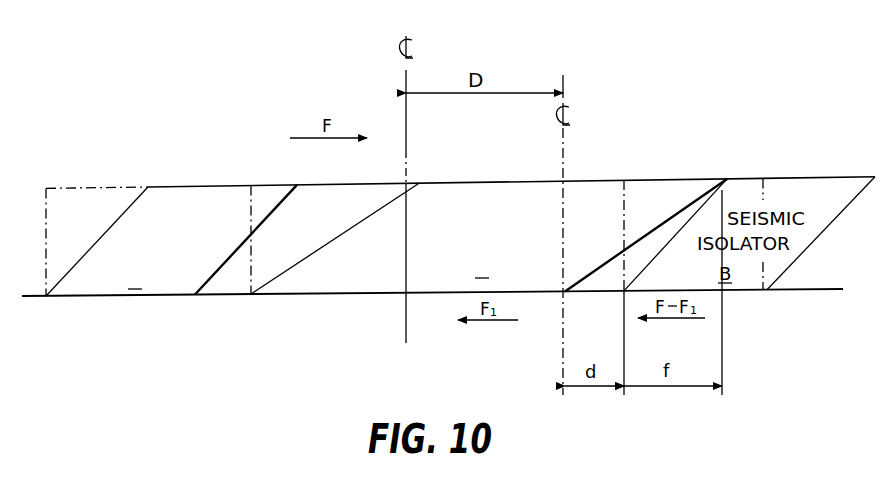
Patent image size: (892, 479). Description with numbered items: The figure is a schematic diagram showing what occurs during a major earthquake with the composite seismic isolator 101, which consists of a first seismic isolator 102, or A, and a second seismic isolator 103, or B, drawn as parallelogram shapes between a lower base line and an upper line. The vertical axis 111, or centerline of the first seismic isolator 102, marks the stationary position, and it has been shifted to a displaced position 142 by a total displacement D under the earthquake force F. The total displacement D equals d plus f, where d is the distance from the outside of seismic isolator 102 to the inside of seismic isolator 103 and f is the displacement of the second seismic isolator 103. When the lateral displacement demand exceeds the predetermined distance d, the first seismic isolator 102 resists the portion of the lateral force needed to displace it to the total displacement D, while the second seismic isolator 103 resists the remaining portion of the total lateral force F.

The composite seismic isolator 101 is at (217, 124).
The first seismic isolator 102 is at (427, 193).
The second seismic isolator 103 is at (125, 210).
The vertical axis 111 is at (405, 126).
The displaced position 142 is at (564, 163).